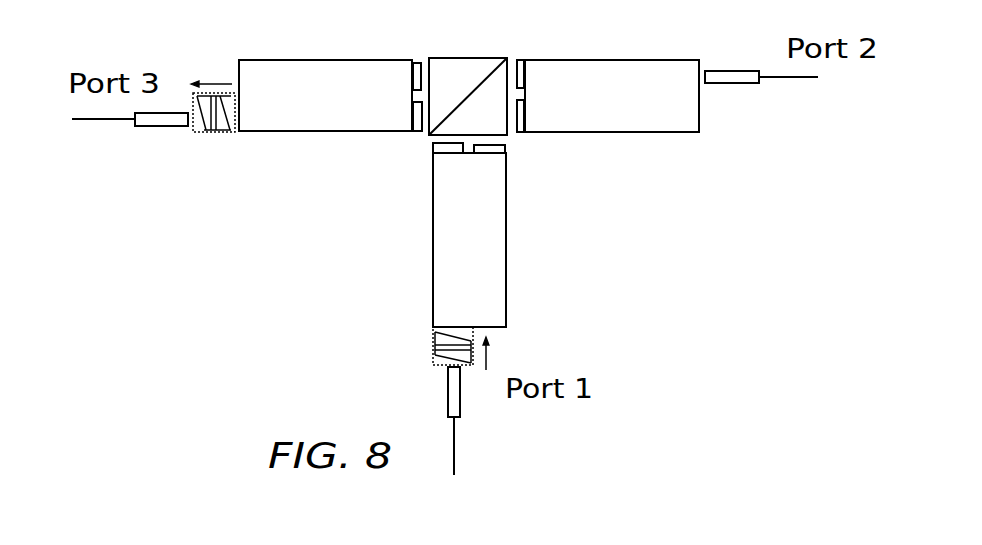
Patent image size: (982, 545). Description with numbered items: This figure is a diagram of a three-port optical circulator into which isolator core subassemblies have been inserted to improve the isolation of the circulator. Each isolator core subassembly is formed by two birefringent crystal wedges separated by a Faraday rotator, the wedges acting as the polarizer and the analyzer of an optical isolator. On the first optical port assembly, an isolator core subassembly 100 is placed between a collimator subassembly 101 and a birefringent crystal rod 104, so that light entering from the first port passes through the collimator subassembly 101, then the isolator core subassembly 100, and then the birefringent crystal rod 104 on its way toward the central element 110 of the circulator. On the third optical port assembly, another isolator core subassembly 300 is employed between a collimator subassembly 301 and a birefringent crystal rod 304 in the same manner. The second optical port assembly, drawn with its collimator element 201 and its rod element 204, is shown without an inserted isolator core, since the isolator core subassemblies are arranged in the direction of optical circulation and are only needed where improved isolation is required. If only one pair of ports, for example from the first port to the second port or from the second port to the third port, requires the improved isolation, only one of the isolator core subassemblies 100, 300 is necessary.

The isolator core subassembly 100 is at (412, 339).
The collimator subassembly 101 is at (495, 421).
The birefringent crystal rod 104 is at (508, 235).
The polarization beam splitter cube 110 is at (464, 71).
The Port 2 optical fiber with collimator 201 is at (761, 100).
The Port 2 waveguide block 204 is at (608, 121).
The isolator core subassembly 300 is at (202, 131).
The collimator subassembly 301 is at (130, 147).
The birefringent crystal rod 304 is at (330, 114).